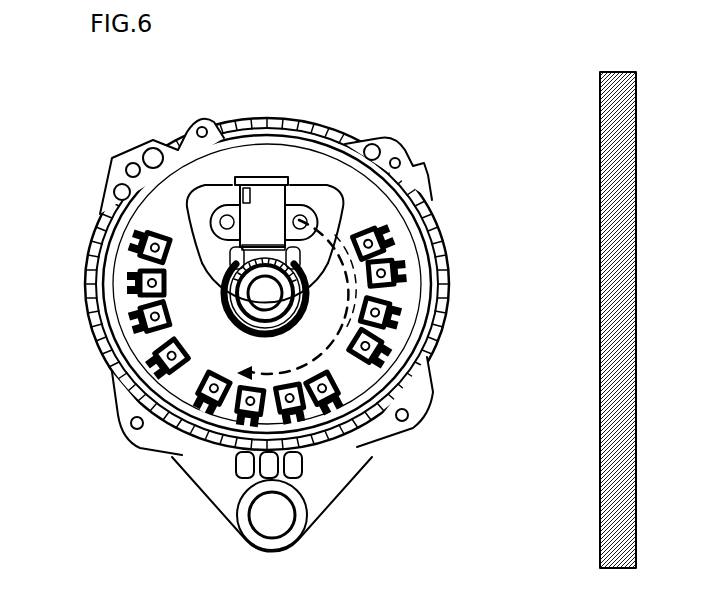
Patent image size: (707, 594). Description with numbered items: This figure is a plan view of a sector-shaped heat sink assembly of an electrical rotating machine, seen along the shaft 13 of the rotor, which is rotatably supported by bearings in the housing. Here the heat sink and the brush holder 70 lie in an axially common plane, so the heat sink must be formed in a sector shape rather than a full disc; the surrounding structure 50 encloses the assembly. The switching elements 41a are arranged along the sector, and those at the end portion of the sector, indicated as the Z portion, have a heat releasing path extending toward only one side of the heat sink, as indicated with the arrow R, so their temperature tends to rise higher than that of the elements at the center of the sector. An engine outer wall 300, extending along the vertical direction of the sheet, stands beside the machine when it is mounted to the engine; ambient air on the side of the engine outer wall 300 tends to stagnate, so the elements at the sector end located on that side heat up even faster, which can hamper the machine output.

The shaft 13 is at (258, 290).
The brush holder 70 is at (240, 178).
The rear housing / frame 50 is at (418, 189).
The switching elements 41a is at (410, 274).
The arrow R is at (310, 368).
The Z portion Z is at (405, 330).
The engine outer wall 300 is at (600, 468).